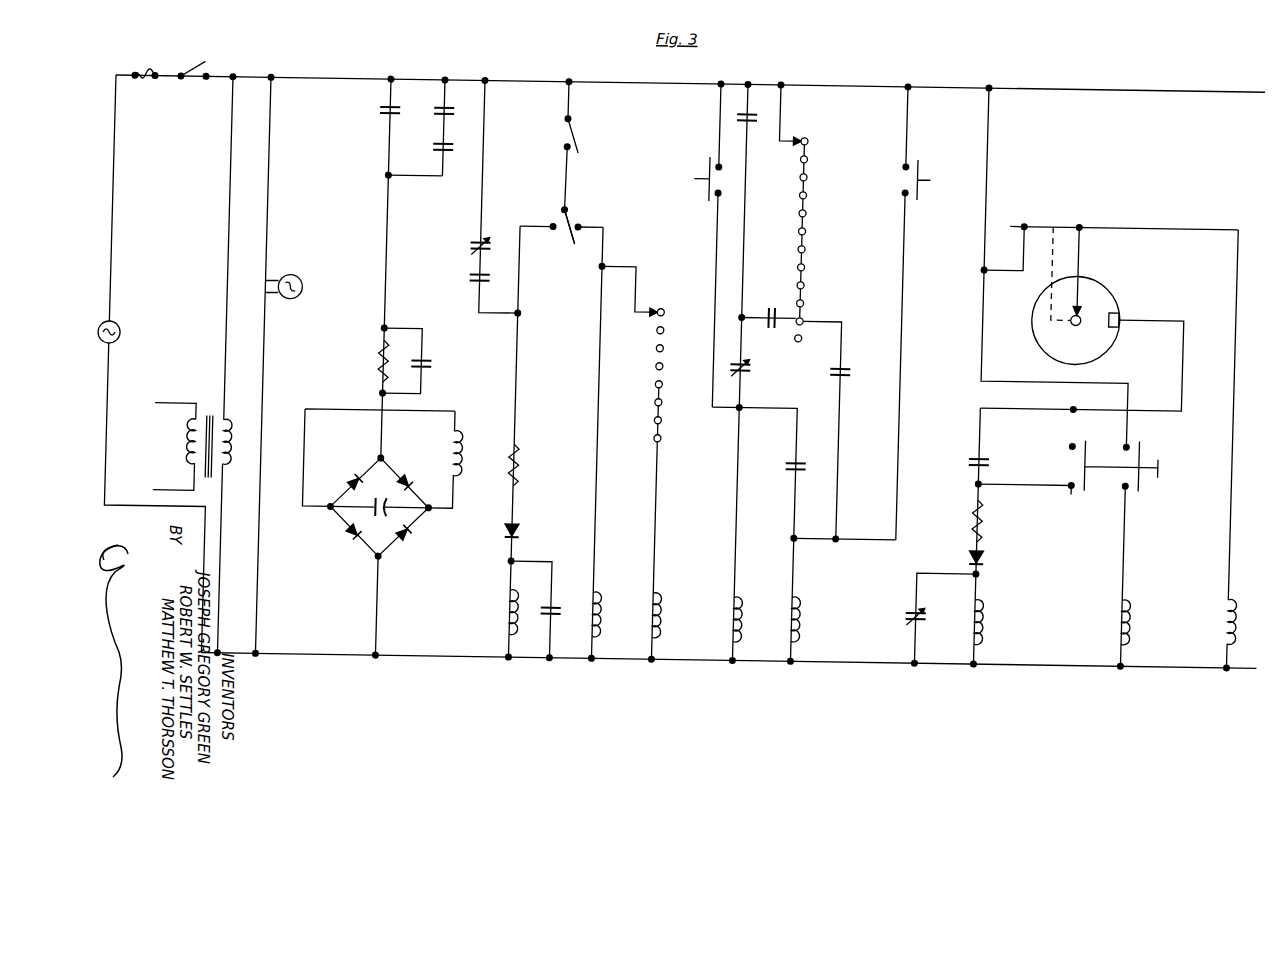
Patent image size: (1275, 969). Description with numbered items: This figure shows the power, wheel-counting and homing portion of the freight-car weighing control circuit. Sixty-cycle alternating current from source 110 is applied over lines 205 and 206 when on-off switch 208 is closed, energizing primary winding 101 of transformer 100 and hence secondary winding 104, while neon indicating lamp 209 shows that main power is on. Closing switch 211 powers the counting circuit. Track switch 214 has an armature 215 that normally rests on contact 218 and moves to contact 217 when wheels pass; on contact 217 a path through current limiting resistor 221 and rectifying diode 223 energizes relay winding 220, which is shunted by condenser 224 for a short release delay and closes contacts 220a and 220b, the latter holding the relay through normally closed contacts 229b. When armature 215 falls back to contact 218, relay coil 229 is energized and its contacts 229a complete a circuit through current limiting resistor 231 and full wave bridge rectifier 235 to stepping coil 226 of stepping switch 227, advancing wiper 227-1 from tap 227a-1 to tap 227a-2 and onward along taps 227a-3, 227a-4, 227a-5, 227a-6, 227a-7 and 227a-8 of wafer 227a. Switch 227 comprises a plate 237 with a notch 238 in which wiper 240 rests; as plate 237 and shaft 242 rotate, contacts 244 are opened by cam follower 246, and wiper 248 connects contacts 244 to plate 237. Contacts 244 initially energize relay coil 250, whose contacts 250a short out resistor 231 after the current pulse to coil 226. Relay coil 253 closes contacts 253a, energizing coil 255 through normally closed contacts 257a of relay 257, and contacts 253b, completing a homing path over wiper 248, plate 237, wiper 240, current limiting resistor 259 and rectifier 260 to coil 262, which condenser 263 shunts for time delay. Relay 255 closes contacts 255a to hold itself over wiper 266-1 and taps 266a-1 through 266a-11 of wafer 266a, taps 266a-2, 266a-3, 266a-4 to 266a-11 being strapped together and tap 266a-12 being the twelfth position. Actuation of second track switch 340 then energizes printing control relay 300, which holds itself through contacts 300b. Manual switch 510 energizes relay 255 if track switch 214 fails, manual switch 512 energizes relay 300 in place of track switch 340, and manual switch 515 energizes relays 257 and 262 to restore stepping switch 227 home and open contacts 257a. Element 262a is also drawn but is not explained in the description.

The transformer 100 is at (204, 365).
The primary winding 101 is at (238, 432).
The secondary winding 104 is at (200, 442).
The A.C. power source 110 is at (126, 327).
The line 205 is at (118, 74).
The line 206 is at (112, 507).
The on-off switch 208 is at (207, 60).
The neon indicating lamp 209 is at (304, 274).
The off-on switch 211 is at (581, 128).
The track switch 214 is at (573, 211).
The armature member 215 is at (574, 241).
The contact 217 is at (556, 218).
The contact 218 is at (586, 220).
The relay winding 220 is at (517, 600).
The contacts 220a is at (470, 104).
The contacts 220b is at (478, 274).
The current limiting resistor 221 is at (530, 462).
The rectifying diode 223 is at (530, 524).
The condenser 224 is at (566, 595).
The stepping coil 226 is at (471, 444).
The stepping switch 227 is at (1109, 268).
The wiper 227-1 is at (649, 300).
The switch contact bank 227a is at (664, 482).
The tap 227a-1 is at (671, 304).
The tap 227a-2 is at (671, 322).
The switch contact 227a-3 is at (671, 340).
The switch contact 227a-4 is at (671, 358).
The switch contact 227a-5 is at (671, 376).
The switch contact 227a-6 is at (671, 394).
The switch contact 227a-7 is at (671, 412).
The switch contact 227a-8 is at (671, 430).
The relay coil 229 is at (610, 600).
The contacts 229a is at (470, 140).
The normally closed contacts 229b is at (475, 240).
The current limiting resistor 231 is at (386, 350).
The bridge rectifier 235 is at (376, 532).
The plate 237 is at (1052, 332).
The notch 238 is at (1127, 304).
The wiper 240 is at (1126, 307).
The shaft 242 is at (1086, 300).
The contacts 244 is at (1024, 217).
The cam follower 246 is at (1056, 258).
The wiper 248 is at (1086, 238).
The relay coil 250 is at (1247, 600).
The contacts 250a is at (439, 358).
The relay coil 253 is at (671, 598).
The contacts 253a is at (756, 117).
The contacts 253b is at (990, 445).
The control relay coil 255 is at (752, 600).
The contacts 255a is at (776, 298).
The relay 257 is at (1142, 602).
The normally closed contacts 257a is at (753, 368).
The current limiting resistor 259 is at (1000, 510).
The rectifier 260 is at (1000, 545).
The relay coil 262 is at (1000, 607).
The capacitor 262a is at (381, 106).
The condenser 263 is at (924, 604).
The wiper 266-1 is at (800, 128).
The wafer 266a is at (820, 223).
The tap 266a-1 is at (810, 131).
The tap 266a-2 is at (810, 149).
The tap 266a-3 is at (810, 167).
The tap 266a-4 is at (810, 185).
The tap 266a-11 is at (810, 309).
The tap 266a-12 is at (807, 331).
The printing control relay 300 is at (810, 600).
The contacts 300b is at (858, 363).
The track switch 340 is at (802, 464).
The manual switch 510 is at (697, 170).
The manual switch 512 is at (933, 168).
The manual switch 515 is at (1168, 452).